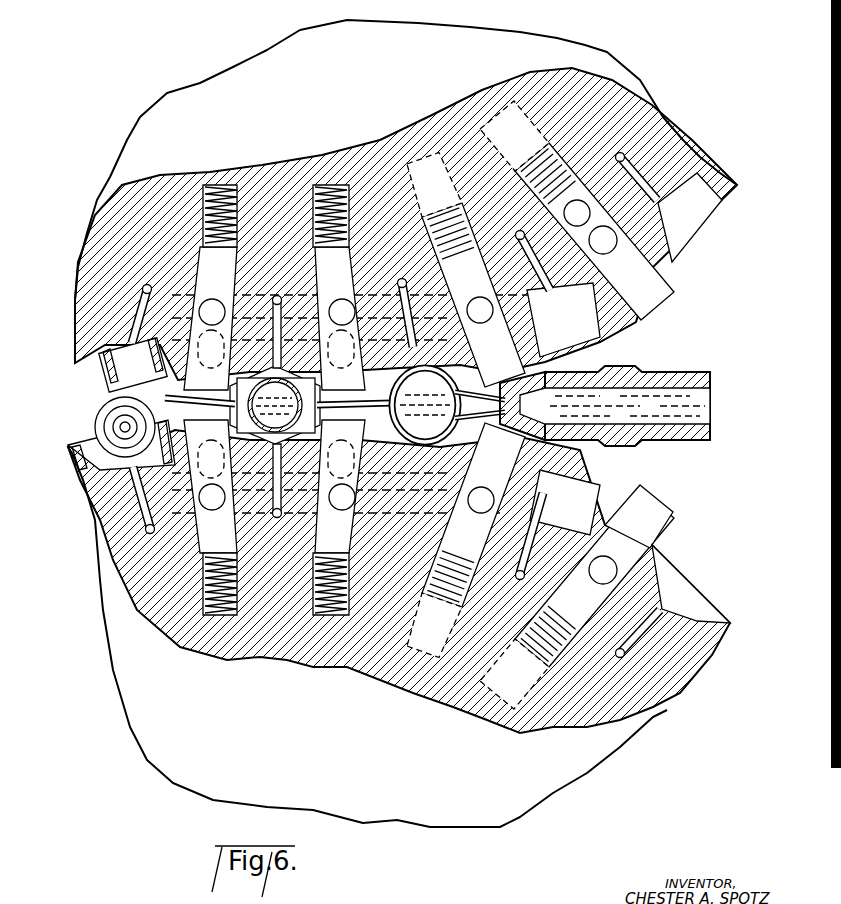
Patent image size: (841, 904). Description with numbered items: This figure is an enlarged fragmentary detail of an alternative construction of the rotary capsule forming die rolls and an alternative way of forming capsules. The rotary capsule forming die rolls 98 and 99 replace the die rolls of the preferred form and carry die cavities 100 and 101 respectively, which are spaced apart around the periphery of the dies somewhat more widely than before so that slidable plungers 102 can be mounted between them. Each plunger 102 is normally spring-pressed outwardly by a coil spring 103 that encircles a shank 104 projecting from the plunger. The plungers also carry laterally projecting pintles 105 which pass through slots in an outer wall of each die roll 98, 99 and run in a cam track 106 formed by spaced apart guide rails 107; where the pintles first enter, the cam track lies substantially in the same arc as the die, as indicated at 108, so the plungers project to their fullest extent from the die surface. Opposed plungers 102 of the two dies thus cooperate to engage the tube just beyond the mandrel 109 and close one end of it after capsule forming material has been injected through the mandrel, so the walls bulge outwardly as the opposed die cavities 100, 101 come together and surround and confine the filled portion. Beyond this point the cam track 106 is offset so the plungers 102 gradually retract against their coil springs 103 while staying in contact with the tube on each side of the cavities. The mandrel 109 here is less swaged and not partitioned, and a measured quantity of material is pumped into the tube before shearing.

The rotary capsule forming die roll 98 is at (618, 95).
The rotary capsule forming die roll 99 is at (677, 693).
The die cavity 100 is at (100, 380).
The die cavity 101 is at (82, 436).
The slidable plunger 102 is at (575, 370).
The coil spring 103 is at (578, 165).
The shank 104 is at (540, 182).
The pintle 105 is at (652, 270).
The cam track 106 is at (76, 300).
The guide rail 107 is at (256, 290).
The cam track arc portion 108 is at (598, 500).
The mandrel 109 is at (688, 375).